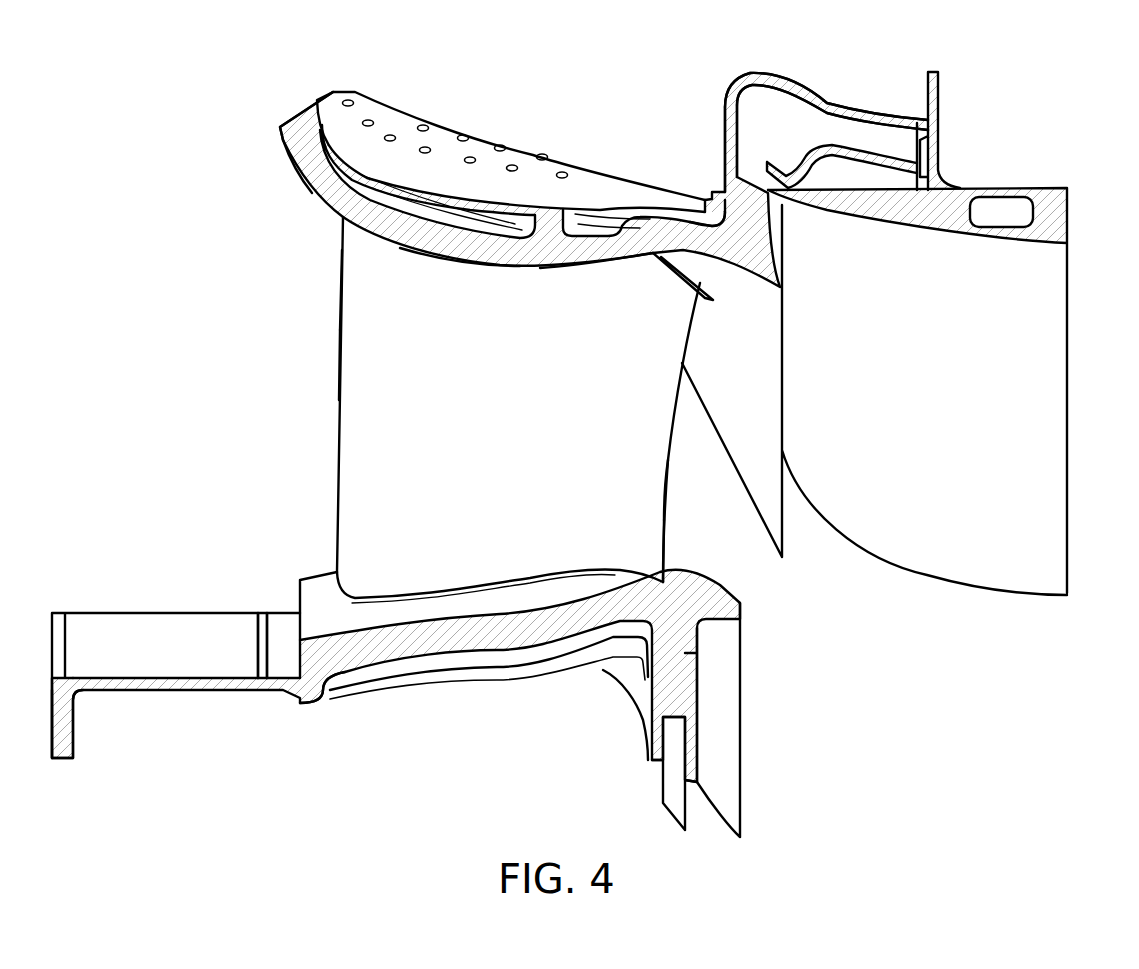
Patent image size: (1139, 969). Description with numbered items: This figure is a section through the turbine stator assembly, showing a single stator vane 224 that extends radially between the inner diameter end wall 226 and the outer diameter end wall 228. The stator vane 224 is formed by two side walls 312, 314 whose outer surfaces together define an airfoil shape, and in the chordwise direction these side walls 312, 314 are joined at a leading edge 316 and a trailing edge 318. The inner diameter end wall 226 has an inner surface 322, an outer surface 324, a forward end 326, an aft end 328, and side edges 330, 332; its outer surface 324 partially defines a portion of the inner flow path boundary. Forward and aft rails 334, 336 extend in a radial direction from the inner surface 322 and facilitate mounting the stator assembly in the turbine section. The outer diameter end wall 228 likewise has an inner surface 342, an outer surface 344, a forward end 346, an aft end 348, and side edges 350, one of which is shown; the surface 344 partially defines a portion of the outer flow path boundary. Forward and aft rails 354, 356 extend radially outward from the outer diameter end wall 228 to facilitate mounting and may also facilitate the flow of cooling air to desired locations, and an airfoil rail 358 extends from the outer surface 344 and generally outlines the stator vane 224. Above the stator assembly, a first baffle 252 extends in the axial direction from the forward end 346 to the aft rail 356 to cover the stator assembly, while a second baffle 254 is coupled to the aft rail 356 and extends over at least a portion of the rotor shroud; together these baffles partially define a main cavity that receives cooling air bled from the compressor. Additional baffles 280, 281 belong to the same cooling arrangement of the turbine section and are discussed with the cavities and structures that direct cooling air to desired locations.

The stator vane 224 is at (382, 407).
The inner diameter end wall 226 is at (272, 598).
The outer diameter end wall 228 is at (312, 197).
The first baffle 252 is at (440, 133).
The second baffle 254 is at (797, 78).
The baffle 280 is at (840, 148).
The baffle 281 is at (980, 200).
The side wall 312 is at (628, 472).
The side wall 314 is at (337, 310).
The leading edge 316 is at (343, 357).
The trailing edge 318 is at (667, 533).
The inner surface 322 is at (342, 680).
The outer surface 324 is at (435, 603).
The forward end 326 is at (157, 650).
The aft end 328 is at (740, 601).
The side edge 330 is at (432, 645).
The side edge 332 is at (218, 620).
The forward rail 334 is at (77, 754).
The aft rail 336 is at (663, 772).
The inner surface 342 is at (510, 267).
The outer surface 344 is at (618, 222).
The forward end 346 is at (307, 150).
The aft end 348 is at (707, 218).
The side edge 350 is at (590, 252).
The forward rail 354 is at (297, 124).
The aft rail 356 is at (733, 177).
The airfoil rail 358 is at (548, 207).